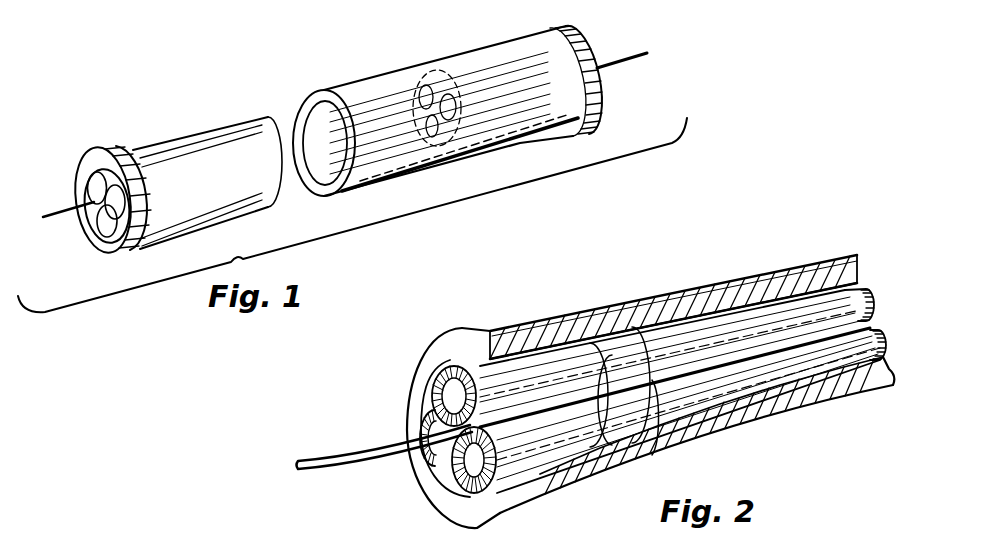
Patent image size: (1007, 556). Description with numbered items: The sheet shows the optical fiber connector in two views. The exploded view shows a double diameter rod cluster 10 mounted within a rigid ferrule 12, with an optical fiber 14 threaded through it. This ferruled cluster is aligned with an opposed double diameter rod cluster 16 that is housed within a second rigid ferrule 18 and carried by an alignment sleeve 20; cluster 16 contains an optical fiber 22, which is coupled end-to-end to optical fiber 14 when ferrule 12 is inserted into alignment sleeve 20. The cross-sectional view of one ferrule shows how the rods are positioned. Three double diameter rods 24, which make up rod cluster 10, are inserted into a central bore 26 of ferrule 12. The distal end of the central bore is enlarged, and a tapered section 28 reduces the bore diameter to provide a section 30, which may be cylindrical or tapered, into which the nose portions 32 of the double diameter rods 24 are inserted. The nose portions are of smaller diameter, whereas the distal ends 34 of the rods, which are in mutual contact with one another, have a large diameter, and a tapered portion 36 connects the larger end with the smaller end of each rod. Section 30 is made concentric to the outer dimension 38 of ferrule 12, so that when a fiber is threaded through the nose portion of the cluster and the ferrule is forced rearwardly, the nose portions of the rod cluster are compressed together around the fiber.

In FIG. 1, the double diameter rod cluster 10 is at (103, 238).
In FIG. 2, the double diameter rod cluster 10 is at (546, 348).
In FIG. 1, the rigid ferrule 12 is at (213, 186).
In FIG. 2, the rigid ferrule 12 is at (641, 296).
In FIG. 1, the optical fiber 14 is at (60, 226).
In FIG. 2, the optical fiber 14 is at (350, 458).
In FIG. 1, the opposed double diameter rod cluster 16 is at (425, 90).
In FIG. 1, the rigid ferrule 18 is at (512, 58).
In FIG. 1, the alignment sleeve 20 is at (358, 78).
In FIG. 1, the optical fiber 22 is at (627, 52).
In FIG. 2, the double diameter rods 24 is at (418, 420).
In FIG. 2, the central bore 26 is at (626, 340).
In FIG. 2, the tapered section 28 is at (690, 330).
In FIG. 2, the section 30 is at (797, 268).
In FIG. 2, the nose portions 32 is at (870, 337).
In FIG. 2, the distal ends 34 is at (594, 463).
In FIG. 2, the tapered portion 36 is at (664, 432).
In FIG. 2, the outer dimension 38 is at (812, 412).